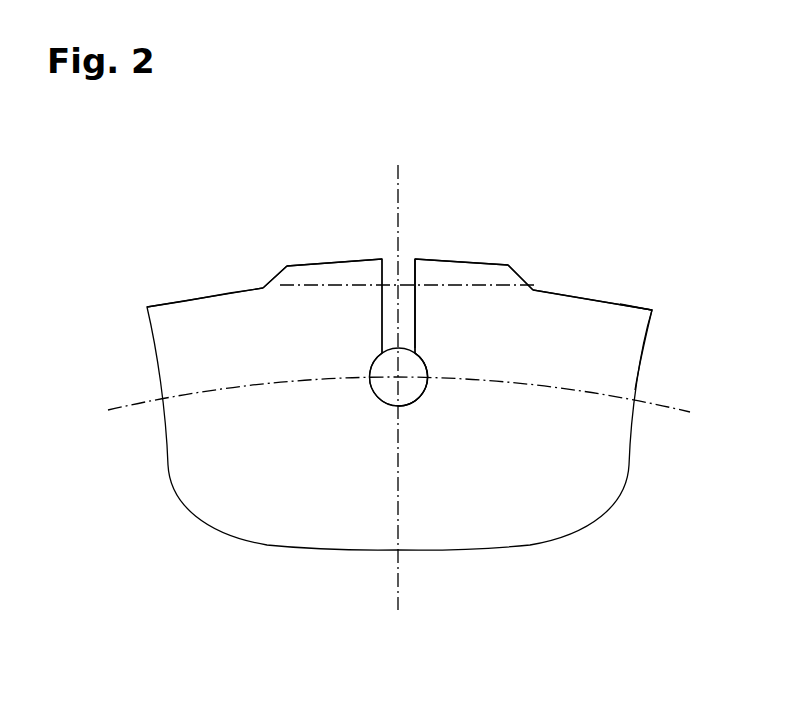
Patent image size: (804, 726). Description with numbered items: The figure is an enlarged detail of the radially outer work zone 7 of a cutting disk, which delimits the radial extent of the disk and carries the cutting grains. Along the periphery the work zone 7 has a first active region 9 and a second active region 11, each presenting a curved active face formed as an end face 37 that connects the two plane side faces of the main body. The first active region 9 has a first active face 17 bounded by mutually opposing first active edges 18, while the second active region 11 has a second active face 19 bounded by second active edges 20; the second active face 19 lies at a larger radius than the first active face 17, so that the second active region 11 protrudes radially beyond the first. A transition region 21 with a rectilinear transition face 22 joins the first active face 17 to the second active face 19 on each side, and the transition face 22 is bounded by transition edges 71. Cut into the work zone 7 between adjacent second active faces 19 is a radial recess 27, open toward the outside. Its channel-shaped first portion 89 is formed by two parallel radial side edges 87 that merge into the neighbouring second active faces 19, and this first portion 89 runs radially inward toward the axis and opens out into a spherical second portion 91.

The work zone 7 is at (221, 555).
The first active region 9 is at (606, 288).
The second active region 11 is at (463, 254).
The first active face 17 is at (203, 298).
The first active edge 18 is at (163, 304).
The second active face 19 is at (312, 264).
The second active edge 20 is at (360, 260).
The transition region 21 is at (532, 270).
The transition face 22 is at (263, 288).
The radial recess 27 is at (419, 412).
The end face 37 is at (645, 308).
The transition edge 71 is at (265, 287).
The side edge 87 is at (414, 308).
The first portion 89 is at (439, 260).
The second portion 91 is at (438, 348).